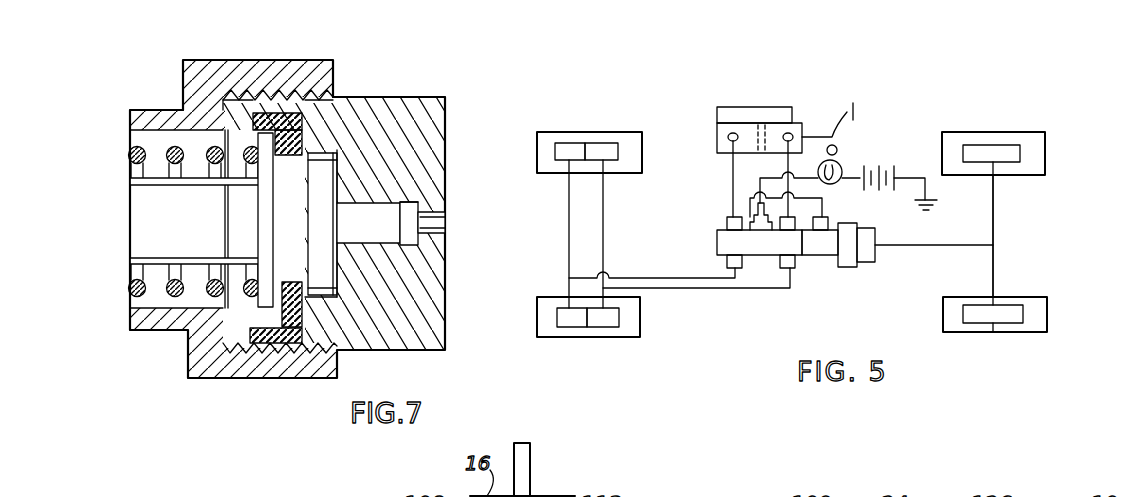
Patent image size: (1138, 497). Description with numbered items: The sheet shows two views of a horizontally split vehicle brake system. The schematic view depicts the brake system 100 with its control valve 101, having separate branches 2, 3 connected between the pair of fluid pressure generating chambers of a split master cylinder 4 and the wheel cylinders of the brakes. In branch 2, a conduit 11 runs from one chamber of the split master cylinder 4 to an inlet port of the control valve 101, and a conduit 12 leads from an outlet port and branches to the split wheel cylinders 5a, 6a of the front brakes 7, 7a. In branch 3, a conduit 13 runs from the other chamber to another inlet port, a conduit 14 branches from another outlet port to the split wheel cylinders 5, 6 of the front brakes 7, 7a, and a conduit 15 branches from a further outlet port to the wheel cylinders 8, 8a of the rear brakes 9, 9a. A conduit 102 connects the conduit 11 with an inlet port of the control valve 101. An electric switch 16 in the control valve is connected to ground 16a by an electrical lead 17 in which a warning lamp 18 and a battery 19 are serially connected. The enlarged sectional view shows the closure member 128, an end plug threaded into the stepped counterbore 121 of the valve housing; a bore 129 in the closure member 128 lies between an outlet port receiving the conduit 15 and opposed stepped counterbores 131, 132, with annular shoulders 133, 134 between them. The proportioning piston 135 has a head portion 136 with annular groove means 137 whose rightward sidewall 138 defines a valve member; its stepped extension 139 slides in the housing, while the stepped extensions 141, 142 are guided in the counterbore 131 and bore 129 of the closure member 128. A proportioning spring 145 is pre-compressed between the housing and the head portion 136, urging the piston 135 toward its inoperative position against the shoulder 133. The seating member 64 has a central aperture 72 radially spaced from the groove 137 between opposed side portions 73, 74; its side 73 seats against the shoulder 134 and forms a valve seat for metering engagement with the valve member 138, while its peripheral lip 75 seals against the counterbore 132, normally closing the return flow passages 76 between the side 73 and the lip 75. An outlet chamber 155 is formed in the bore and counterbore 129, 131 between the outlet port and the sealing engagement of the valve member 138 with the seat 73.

In FIG. 5, the branch 2 is at (610, 207).
In FIG. 5, the branch 3 is at (1010, 231).
In FIG. 5, the split master cylinder 4 is at (715, 112).
In FIG. 5, the split wheel cylinder 5 is at (598, 148).
In FIG. 5, the split wheel cylinder 5a is at (565, 148).
In FIG. 5, the split wheel cylinder 6 is at (613, 330).
In FIG. 5, the split wheel cylinder 6a is at (572, 330).
In FIG. 5, the front brake 7 is at (642, 145).
In FIG. 5, the front brake 7a is at (642, 325).
In FIG. 5, the wheel cylinder 8 is at (982, 143).
In FIG. 5, the wheel cylinder 8a is at (993, 332).
In FIG. 5, the rear brake 9 is at (1045, 153).
In FIG. 5, the rear brake 9a is at (1107, 316).
In FIG. 5, the conduit 11 is at (733, 170).
In FIG. 5, the conduit 12 is at (668, 277).
In FIG. 5, the conduit 13 is at (788, 165).
In FIG. 5, the conduit 14 is at (732, 293).
In FIG. 5, the conduit 15 is at (907, 248).
In FIG. 5, the electric switch 16 is at (763, 230).
In FIG. 5, the ground 16a is at (985, 233).
In FIG. 5, the electrical lead 17 is at (916, 178).
In FIG. 5, the driver warning device 18 is at (840, 165).
In FIG. 5, the battery 19 is at (890, 165).
In FIG. 7, the seating member 64 is at (242, 340).
In FIG. 7, the aperture 72 is at (297, 163).
In FIG. 7, the seating member side 73 is at (310, 128).
In FIG. 7, the seating member side 74 is at (232, 133).
In FIG. 7, the peripheral lip 75 is at (248, 340).
In FIG. 7, the return flow passages 76 is at (297, 347).
In FIG. 5, the horizontally split brake system 100 is at (898, 110).
In FIG. 5, the control valve 101 is at (820, 258).
In FIG. 5, the conduit 102 is at (822, 203).
In FIG. 7, the stepped counterbore 121 is at (283, 92).
In FIG. 7, the closure member 128 is at (415, 98).
In FIG. 7, the bore 129 is at (413, 202).
In FIG. 7, the stepped counterbore 131 is at (328, 140).
In FIG. 7, the stepped counterbore 132 is at (235, 343).
In FIG. 7, the annular shoulder 133 is at (357, 265).
In FIG. 7, the annular shoulder 134 is at (318, 308).
In FIG. 7, the proportioning piston 135 is at (365, 93).
In FIG. 7, the head portion 136 is at (260, 195).
In FIG. 7, the annular groove means 137 is at (265, 256).
In FIG. 7, the valve member 138 is at (300, 275).
In FIG. 7, the stepped extension 139 is at (182, 232).
In FIG. 7, the stepped extension 141 is at (338, 180).
In FIG. 7, the stepped extension 142 is at (385, 235).
In FIG. 7, the proportioning spring 145 is at (175, 150).
In FIG. 7, the outlet chamber 155 is at (412, 240).